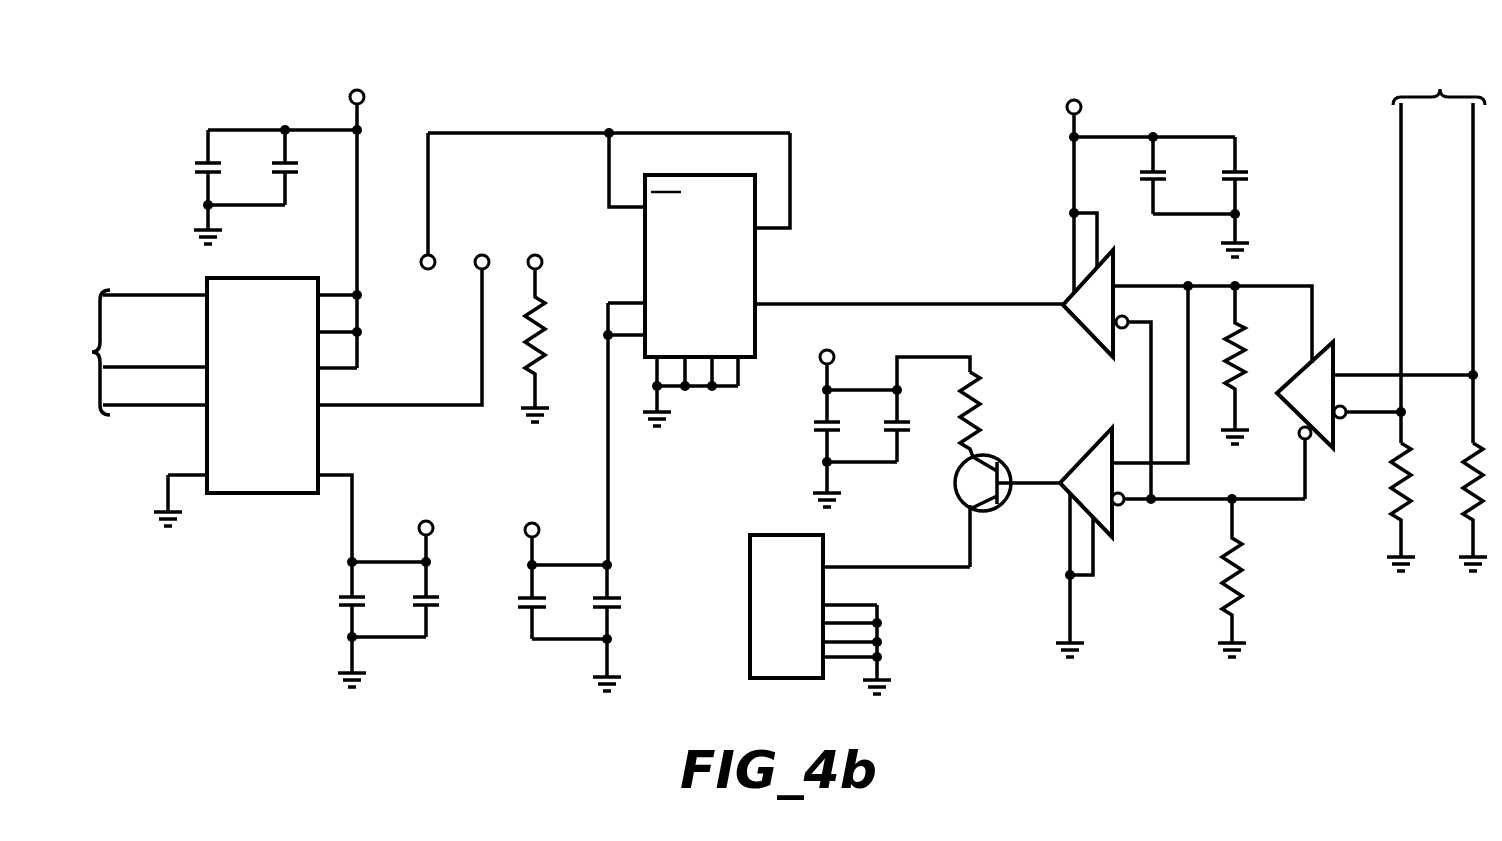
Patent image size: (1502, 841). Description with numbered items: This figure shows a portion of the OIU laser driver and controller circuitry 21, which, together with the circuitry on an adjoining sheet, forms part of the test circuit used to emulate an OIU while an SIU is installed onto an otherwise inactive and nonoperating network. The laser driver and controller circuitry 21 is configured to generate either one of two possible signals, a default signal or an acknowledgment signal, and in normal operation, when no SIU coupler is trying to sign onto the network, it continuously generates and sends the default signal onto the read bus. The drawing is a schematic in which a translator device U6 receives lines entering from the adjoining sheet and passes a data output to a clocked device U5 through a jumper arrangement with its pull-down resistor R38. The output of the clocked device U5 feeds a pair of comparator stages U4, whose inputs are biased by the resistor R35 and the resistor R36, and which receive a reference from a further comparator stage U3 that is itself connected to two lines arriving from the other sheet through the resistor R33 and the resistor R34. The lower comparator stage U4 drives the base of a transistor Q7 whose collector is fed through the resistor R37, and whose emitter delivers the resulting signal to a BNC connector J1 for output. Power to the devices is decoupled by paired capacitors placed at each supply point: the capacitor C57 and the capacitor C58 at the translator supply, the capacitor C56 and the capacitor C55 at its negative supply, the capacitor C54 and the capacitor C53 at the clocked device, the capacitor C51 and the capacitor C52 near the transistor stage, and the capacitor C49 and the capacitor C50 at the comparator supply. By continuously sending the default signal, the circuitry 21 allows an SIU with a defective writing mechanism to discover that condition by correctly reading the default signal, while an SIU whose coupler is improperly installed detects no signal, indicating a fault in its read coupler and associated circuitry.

The OIU laser driver and controller circuitry 21 is at (848, 152).
The TTL/ECL translator U6 is at (262, 394).
The flip-flop U5 is at (724, 266).
The comparator U4 is at (1090, 393).
The comparator U3 is at (1326, 392).
The transistor Q7 is at (983, 503).
The BNC connector J1 is at (803, 614).
The resistor R33 is at (1450, 507).
The resistor R34 is at (1377, 507).
The resistor R35 is at (1258, 365).
The resistor R36 is at (1257, 578).
The resistor R37 is at (999, 414).
The resistor R38 is at (560, 345).
The capacitor C49 is at (1175, 175).
The capacitor C50 is at (1262, 175).
The capacitor C51 is at (810, 426).
The capacitor C52 is at (875, 426).
The capacitor C53 is at (628, 602).
The capacitor C54 is at (556, 602).
The capacitor C55 is at (403, 599).
The capacitor C56 is at (331, 599).
The capacitor C57 is at (183, 167).
The capacitor C58 is at (267, 167).